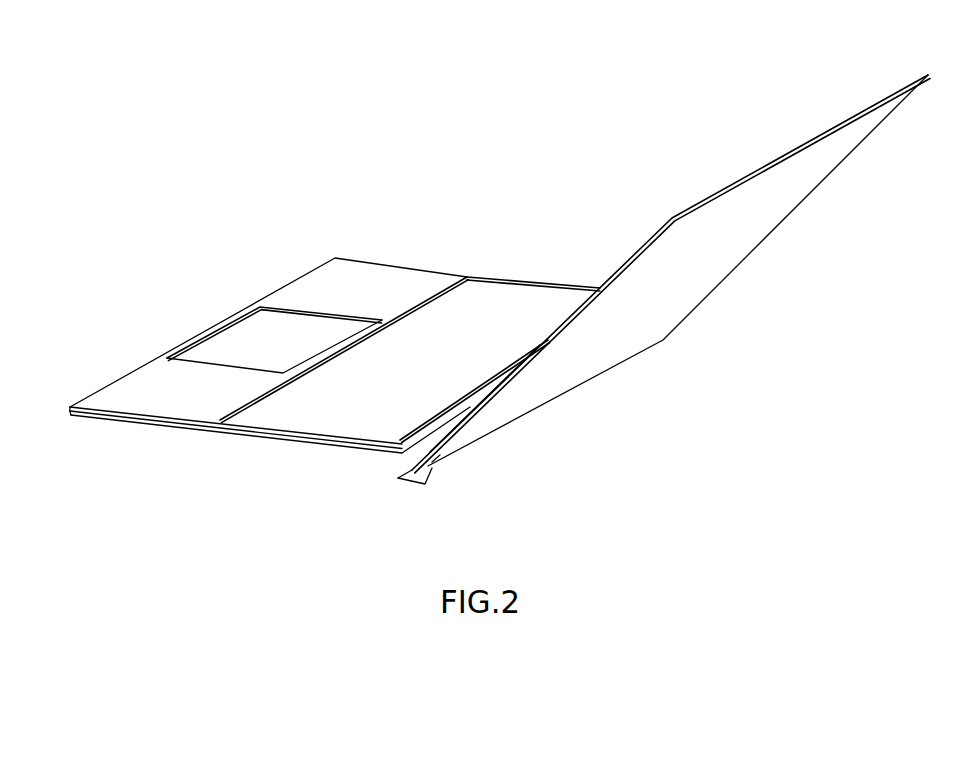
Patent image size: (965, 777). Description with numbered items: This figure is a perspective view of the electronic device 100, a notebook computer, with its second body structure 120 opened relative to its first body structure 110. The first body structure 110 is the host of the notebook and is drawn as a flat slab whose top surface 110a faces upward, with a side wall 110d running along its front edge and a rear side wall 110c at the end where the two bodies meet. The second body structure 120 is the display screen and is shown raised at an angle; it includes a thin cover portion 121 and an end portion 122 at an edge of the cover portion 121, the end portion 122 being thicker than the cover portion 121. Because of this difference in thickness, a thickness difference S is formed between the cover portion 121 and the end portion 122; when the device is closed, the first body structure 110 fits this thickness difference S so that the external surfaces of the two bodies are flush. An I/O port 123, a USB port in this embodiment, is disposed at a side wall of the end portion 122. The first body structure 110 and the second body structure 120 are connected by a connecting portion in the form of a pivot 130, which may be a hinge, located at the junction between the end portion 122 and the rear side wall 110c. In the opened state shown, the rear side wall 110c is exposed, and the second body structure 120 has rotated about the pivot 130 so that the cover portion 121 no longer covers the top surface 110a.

The electronic device 100 is at (92, 39).
The first body structure 110 is at (113, 377).
The top surface 110a is at (367, 287).
The rear side wall 110c is at (442, 442).
The side wall 110d is at (233, 433).
The second body structure 120 is at (686, 426).
The cover portion 121 is at (553, 385).
The end portion 122 is at (423, 483).
The I/O port 123 is at (397, 480).
The pivot 130 is at (455, 425).
The thickness difference S is at (437, 462).